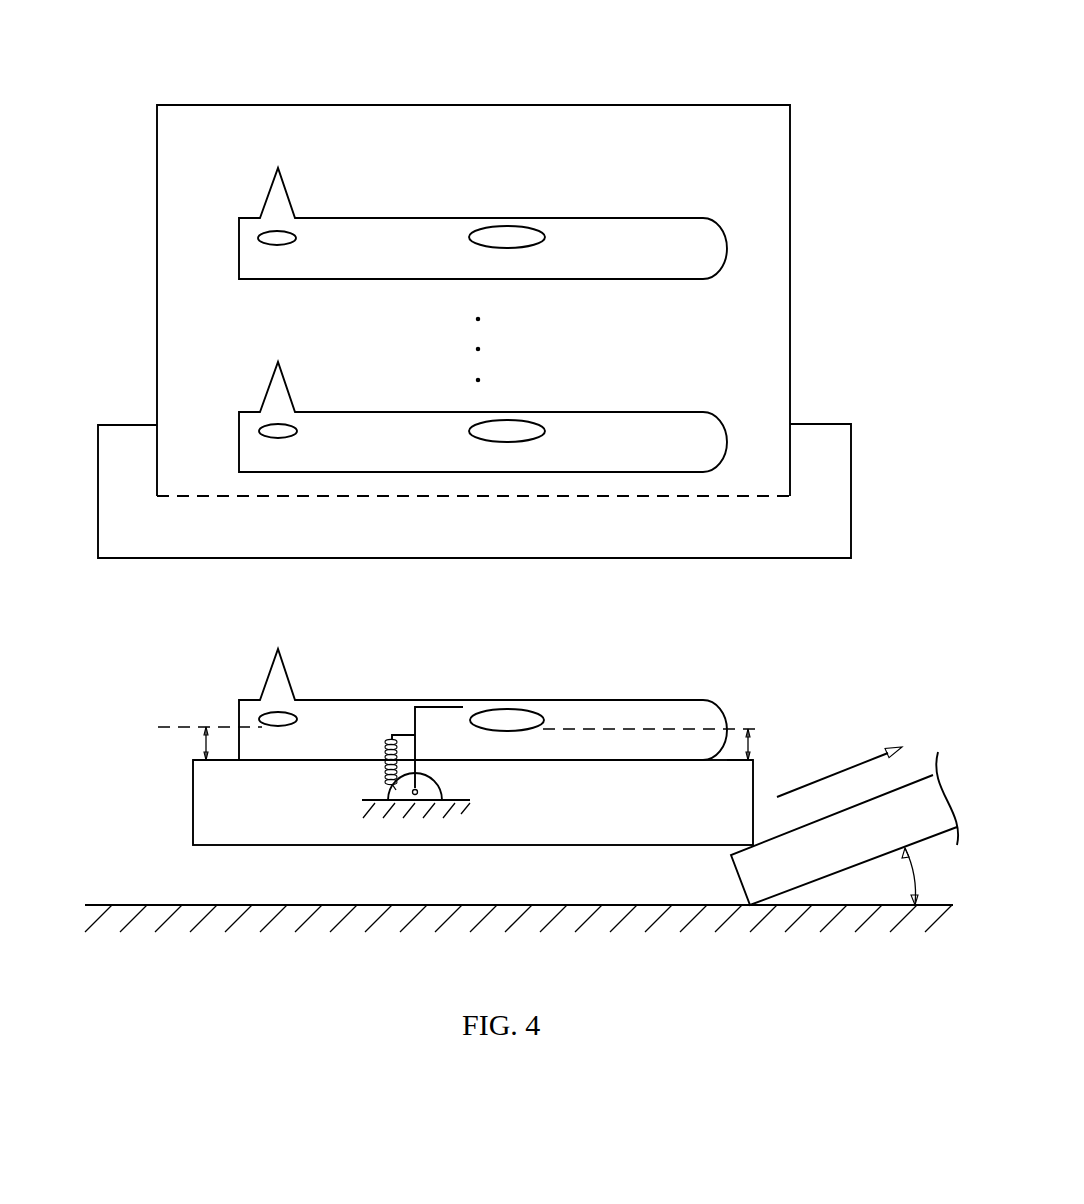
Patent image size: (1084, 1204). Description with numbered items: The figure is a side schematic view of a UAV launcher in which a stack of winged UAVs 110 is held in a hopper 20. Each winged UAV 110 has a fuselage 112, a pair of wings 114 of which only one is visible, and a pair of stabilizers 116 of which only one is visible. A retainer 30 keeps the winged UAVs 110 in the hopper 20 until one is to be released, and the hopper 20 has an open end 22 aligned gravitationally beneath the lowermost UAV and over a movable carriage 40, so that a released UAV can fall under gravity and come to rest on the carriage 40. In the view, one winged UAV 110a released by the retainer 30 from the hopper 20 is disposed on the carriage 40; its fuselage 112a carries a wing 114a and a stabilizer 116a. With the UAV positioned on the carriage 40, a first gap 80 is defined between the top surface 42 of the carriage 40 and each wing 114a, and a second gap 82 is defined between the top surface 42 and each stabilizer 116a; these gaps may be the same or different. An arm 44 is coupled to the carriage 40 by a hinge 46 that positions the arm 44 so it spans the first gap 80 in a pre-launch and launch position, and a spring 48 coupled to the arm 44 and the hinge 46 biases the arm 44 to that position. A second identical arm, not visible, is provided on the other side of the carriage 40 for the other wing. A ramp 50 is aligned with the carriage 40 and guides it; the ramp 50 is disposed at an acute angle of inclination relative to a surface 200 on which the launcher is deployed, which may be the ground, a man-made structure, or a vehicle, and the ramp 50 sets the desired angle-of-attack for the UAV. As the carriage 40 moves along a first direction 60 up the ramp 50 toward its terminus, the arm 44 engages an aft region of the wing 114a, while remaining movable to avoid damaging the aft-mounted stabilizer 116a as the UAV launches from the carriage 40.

The hopper 20 is at (157, 175).
The open end 22 is at (732, 496).
The retainer 30 is at (851, 495).
The winged UAV 110 is at (541, 250).
The fuselage 112 is at (356, 236).
The wing 114 is at (531, 222).
The stabilizer 116 is at (277, 231).
The winged UAV 110a is at (504, 687).
The fuselage 112a is at (472, 708).
The wing 114a is at (520, 708).
The stabilizer 116a is at (288, 712).
The carriage 40 is at (193, 800).
The top surface 42 is at (223, 760).
The arm 44 is at (413, 722).
The hinge 46 is at (436, 787).
The spring 48 is at (384, 768).
The ramp 50 is at (753, 875).
The first direction 60 is at (867, 758).
The first gap 80 is at (755, 747).
The second gap 82 is at (203, 745).
The surface 200 is at (102, 905).